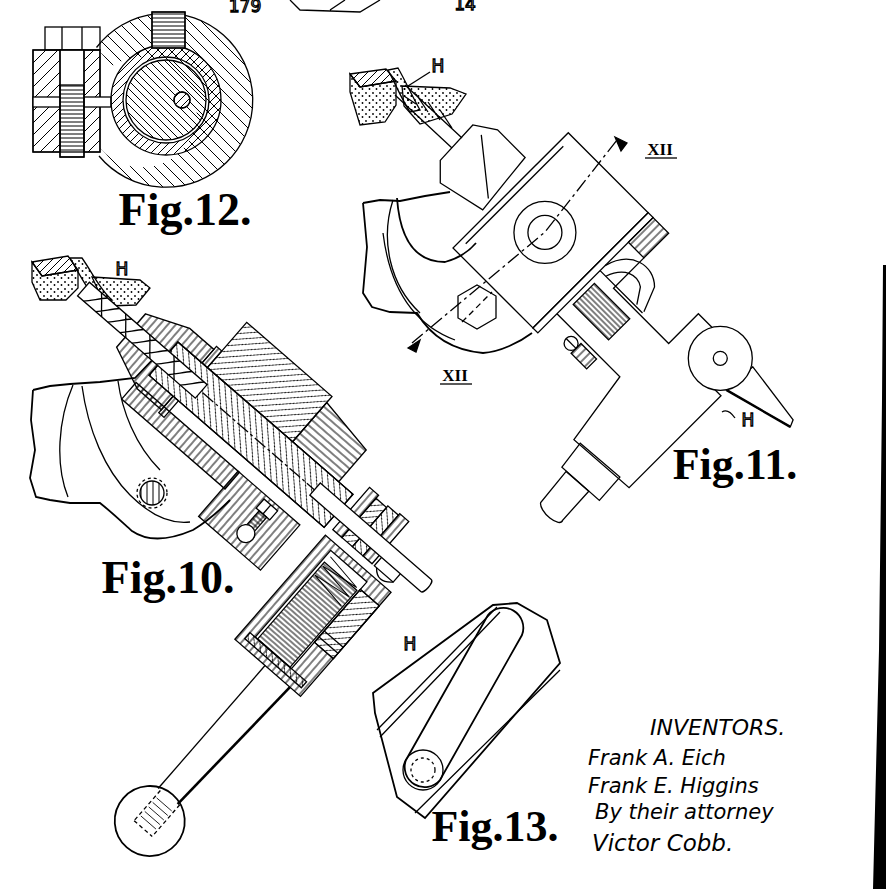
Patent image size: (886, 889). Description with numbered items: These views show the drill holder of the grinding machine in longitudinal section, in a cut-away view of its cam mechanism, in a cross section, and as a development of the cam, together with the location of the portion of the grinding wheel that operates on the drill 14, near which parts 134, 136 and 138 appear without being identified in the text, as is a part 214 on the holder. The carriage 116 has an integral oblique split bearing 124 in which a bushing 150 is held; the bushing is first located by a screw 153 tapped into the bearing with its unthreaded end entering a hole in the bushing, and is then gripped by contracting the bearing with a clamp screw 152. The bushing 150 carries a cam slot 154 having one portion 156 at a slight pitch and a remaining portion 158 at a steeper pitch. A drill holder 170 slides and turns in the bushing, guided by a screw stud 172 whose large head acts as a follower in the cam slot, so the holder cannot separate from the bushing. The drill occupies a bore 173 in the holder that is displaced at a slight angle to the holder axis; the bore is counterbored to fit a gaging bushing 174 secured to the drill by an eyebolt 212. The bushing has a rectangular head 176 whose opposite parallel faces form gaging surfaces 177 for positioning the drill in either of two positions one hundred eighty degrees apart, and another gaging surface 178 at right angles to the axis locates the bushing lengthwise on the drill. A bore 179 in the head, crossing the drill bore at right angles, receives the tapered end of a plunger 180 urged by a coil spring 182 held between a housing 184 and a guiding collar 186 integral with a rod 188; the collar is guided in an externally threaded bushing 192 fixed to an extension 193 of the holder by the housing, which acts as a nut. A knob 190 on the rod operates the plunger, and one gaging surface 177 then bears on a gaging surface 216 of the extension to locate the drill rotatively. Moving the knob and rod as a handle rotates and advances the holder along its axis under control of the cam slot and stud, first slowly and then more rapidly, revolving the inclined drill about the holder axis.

In FIG. 12, the drill 14 is at (195, 103).
In FIG. 10, the drill 14 is at (108, 305).
In FIG. 11, the drill 14 is at (437, 142).
In FIG. 10, the carriage 116 is at (55, 490).
In FIG. 11, the carriage 116 is at (447, 272).
In FIG. 12, the split bearing 124 is at (205, 170).
In FIG. 10, the split bearing 124 is at (270, 360).
In FIG. 11, the split bearing 124 is at (566, 150).
In FIG. 10, the work block 134 is at (40, 262).
In FIG. 11, the work block 134 is at (352, 76).
In FIG. 10, the work block 136 is at (92, 272).
In FIG. 11, the work block 136 is at (395, 110).
In FIG. 10, the work piece 138 is at (86, 262).
In FIG. 11, the work piece 138 is at (392, 76).
In FIG. 12, the bushing 150 is at (205, 143).
In FIG. 10, the bushing 150 is at (152, 430).
In FIG. 12, the clamp screw 152 is at (72, 33).
In FIG. 10, the clamp screw 152 is at (165, 493).
In FIG. 11, the clamp screw 152 is at (470, 300).
In FIG. 11, the screw 153 is at (562, 235).
In FIG. 11, the cam slot 154 is at (612, 276).
In FIG. 13, the cam slot 154 is at (478, 662).
In FIG. 13, the cam slot portion 156 is at (445, 750).
In FIG. 13, the cam slot portion 158 is at (556, 672).
In FIG. 12, the drill holder 170 is at (200, 93).
In FIG. 10, the drill holder 170 is at (340, 437).
In FIG. 11, the drill holder 170 is at (622, 292).
In FIG. 10, the screw stud 172 is at (265, 520).
In FIG. 11, the screw stud 172 is at (588, 370).
In FIG. 10, the bore 173 is at (182, 340).
In FIG. 10, the gaging bushing 174 is at (260, 553).
In FIG. 10, the rectangular head 176 is at (430, 573).
In FIG. 10, the gaging surfaces 177 is at (396, 520).
In FIG. 10, the gaging surface 178 is at (362, 500).
In FIG. 10, the bore 179 is at (400, 533).
In FIG. 10, the plunger 180 is at (346, 612).
In FIG. 10, the coil spring 182 is at (320, 670).
In FIG. 10, the housing 184 is at (292, 688).
In FIG. 11, the housing 184 is at (650, 480).
In FIG. 10, the guiding collar 186 is at (348, 626).
In FIG. 10, the rod 188 is at (200, 750).
In FIG. 11, the rod 188 is at (595, 500).
In FIG. 10, the knob 190 is at (145, 792).
In FIG. 10, the externally threaded bushing 192 is at (340, 648).
In FIG. 10, the extension 193 is at (385, 620).
In FIG. 10, the eyebolt 212 is at (415, 548).
In FIG. 11, the knob 214 is at (715, 330).
In FIG. 10, the gaging surface 216 is at (410, 590).